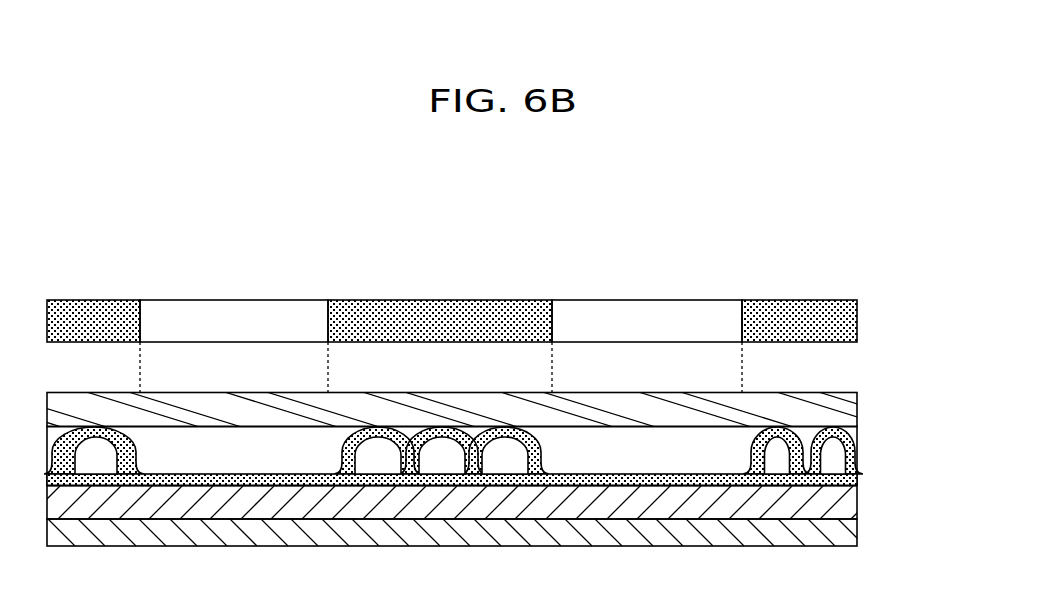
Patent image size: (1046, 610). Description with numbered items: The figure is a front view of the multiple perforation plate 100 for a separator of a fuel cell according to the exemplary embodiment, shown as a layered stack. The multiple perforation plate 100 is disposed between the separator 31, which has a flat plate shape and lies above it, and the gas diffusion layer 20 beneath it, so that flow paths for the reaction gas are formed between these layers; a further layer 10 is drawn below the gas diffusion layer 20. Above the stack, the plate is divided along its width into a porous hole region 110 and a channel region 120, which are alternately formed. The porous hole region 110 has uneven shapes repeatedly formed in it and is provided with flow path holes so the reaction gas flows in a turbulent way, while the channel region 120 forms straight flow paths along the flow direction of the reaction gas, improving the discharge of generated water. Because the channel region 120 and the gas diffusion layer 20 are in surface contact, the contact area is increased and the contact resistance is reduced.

The substrate 10 is at (845, 531).
The gas diffusion layer 20 is at (845, 503).
The separator 31 is at (845, 410).
The multiple perforation plate 100 is at (872, 426).
The porous hole region 110 is at (94, 314).
The channel region 120 is at (237, 316).